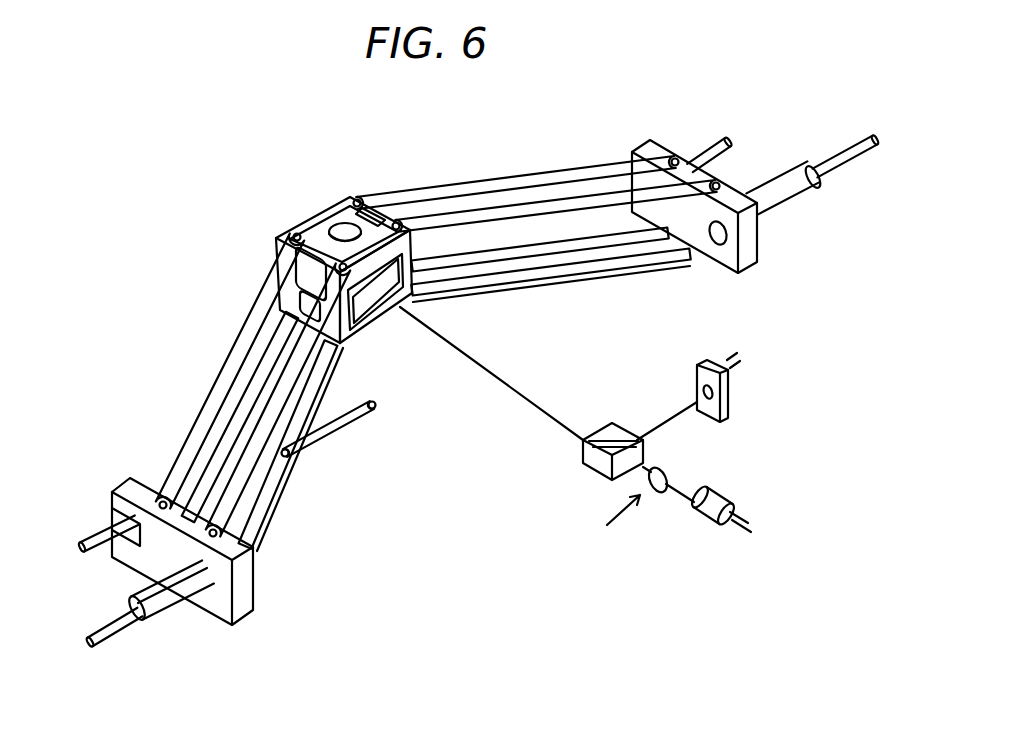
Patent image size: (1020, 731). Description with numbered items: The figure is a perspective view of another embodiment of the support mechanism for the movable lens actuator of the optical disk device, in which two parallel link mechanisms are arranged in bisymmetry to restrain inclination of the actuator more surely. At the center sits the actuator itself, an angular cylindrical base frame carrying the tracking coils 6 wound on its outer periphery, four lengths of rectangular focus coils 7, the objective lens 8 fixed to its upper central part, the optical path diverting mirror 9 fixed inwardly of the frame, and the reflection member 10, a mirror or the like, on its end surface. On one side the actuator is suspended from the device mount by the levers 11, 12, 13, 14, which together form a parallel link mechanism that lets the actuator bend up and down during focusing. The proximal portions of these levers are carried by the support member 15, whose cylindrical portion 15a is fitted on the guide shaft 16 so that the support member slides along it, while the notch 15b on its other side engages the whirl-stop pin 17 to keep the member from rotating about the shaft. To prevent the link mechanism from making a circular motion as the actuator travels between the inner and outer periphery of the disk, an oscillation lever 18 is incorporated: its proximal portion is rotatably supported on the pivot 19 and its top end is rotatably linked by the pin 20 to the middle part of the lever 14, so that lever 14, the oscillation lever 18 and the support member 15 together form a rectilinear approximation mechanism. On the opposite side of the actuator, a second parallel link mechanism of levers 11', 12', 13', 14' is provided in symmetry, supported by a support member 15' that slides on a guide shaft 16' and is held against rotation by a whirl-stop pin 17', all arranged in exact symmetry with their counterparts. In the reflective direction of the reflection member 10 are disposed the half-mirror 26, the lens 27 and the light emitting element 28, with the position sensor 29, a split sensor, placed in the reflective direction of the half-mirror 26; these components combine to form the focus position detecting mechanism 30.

The tracking coils 6 is at (332, 216).
The focus coils 7 is at (283, 280).
The objective lens 8 is at (340, 230).
The optical path diverting mirror 9 is at (390, 303).
The reflection member 10 is at (384, 320).
The lever 11 is at (230, 370).
The lever 12 is at (221, 417).
The lever 13 is at (278, 400).
The lever 14 is at (333, 445).
The support member 15 is at (208, 551).
The cylindrical portion 15a is at (170, 613).
The notch 15b is at (113, 513).
The guide shaft 16 is at (117, 641).
The whirl-stop pin 17 is at (101, 561).
The oscillation lever 18 is at (350, 418).
The pivot 19 is at (378, 406).
The pin 20 is at (288, 459).
The lever 11' is at (516, 162).
The lever 12' is at (544, 276).
The lever 13' is at (556, 173).
The lever 14' is at (550, 291).
The support member 15' is at (723, 206).
The guide shaft 16' is at (812, 154).
The whirl-stop pin 17' is at (722, 126).
The half-mirror 26 is at (592, 466).
The lens 27 is at (657, 490).
The light emitting element 28 is at (712, 495).
The position sensor 29 is at (733, 386).
The focus position detecting mechanism 30 is at (605, 519).